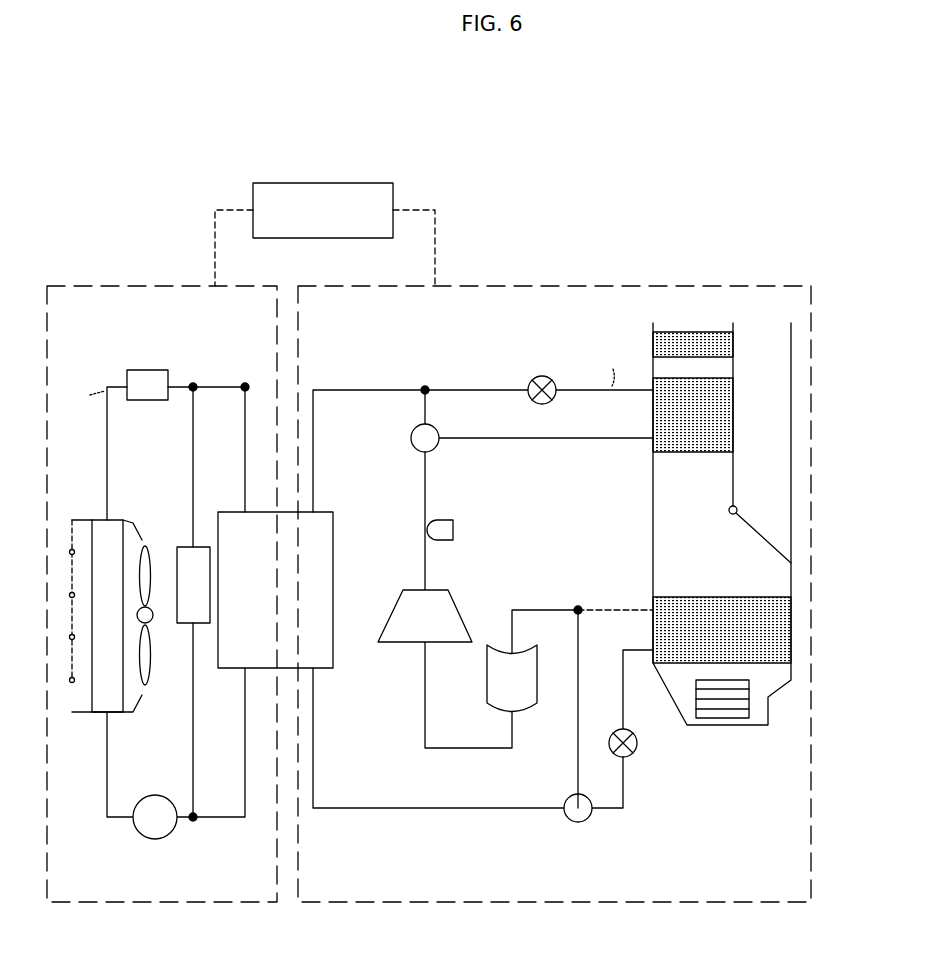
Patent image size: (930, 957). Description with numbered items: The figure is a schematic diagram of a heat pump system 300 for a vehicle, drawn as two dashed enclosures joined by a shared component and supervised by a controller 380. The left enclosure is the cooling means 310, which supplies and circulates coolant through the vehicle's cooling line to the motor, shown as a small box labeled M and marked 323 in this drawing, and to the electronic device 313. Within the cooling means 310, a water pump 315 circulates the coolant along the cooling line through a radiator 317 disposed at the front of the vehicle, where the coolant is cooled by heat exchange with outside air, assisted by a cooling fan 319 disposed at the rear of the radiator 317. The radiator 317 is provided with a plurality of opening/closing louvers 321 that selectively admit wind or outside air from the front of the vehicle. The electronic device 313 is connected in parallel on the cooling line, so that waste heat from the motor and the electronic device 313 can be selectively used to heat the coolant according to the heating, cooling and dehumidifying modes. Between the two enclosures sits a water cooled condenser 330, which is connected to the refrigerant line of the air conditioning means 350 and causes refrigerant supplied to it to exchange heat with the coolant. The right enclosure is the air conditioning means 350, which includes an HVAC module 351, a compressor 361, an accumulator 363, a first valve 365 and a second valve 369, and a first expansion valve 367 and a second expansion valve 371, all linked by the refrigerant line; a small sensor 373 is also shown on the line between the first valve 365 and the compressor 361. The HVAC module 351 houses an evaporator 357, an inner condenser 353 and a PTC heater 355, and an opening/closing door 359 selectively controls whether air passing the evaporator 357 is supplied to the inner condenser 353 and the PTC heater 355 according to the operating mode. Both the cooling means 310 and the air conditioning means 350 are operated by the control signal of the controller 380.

The heat pump system 300 is at (462, 84).
The cooling means 310 is at (70, 284).
The electronic device 313 is at (190, 545).
The water pump 315 is at (156, 840).
The radiator 317 is at (100, 517).
The cooling fan 319 is at (150, 624).
The opening/closing louvers 321 is at (72, 684).
The motor 323 is at (147, 368).
The water cooled condenser 330 is at (335, 521).
The air conditioning means 350 is at (670, 284).
The HVAC module 351 is at (771, 455).
The inner condenser 353 is at (735, 428).
The PTC heater 355 is at (735, 345).
The evaporator 357 is at (775, 633).
The opening/closing door 359 is at (765, 536).
The compressor 361 is at (395, 645).
The accumulator 363 is at (527, 706).
The first valve 365 is at (410, 438).
The first expansion valve 367 is at (542, 376).
The second valve 369 is at (578, 822).
The second expansion valve 371 is at (637, 752).
The pressure sensor 373 is at (455, 530).
The controller 380 is at (314, 181).